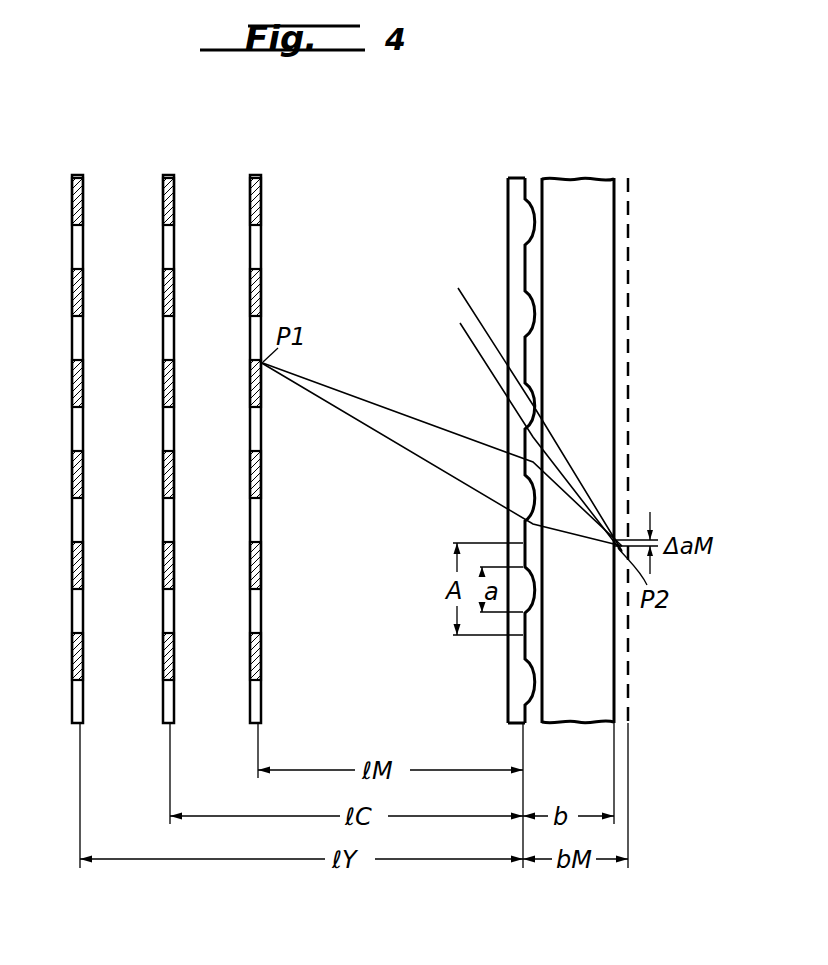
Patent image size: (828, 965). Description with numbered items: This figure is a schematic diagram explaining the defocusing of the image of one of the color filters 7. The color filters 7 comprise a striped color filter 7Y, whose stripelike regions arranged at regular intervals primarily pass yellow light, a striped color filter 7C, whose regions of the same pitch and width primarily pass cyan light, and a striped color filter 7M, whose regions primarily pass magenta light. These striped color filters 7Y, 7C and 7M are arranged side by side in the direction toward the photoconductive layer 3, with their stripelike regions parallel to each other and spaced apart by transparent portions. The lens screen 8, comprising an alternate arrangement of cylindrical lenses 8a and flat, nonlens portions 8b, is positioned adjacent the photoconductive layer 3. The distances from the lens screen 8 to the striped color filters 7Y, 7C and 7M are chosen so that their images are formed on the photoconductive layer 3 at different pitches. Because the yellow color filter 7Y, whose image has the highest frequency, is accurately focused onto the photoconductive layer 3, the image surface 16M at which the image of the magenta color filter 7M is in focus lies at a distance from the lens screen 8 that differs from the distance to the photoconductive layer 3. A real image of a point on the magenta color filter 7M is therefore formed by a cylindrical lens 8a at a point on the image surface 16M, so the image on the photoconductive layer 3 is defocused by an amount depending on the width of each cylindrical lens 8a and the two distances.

The color filters 7 is at (184, 107).
The striped color filter 7Y is at (78, 175).
The striped color filter 7C is at (169, 175).
The striped color filter 7M is at (256, 175).
The lens screen 8 is at (512, 178).
The cylindrical lenses 8a is at (533, 212).
The flat, nonlens portions 8b is at (525, 262).
The photoconductive layer 3 is at (614, 195).
The image surface 16M is at (629, 703).